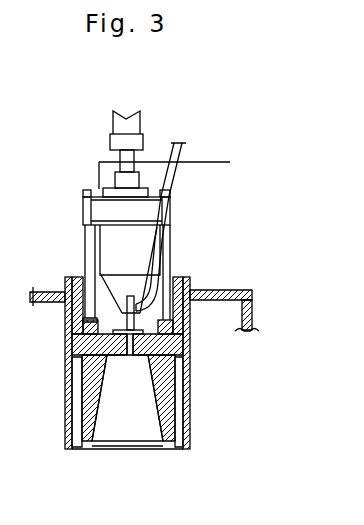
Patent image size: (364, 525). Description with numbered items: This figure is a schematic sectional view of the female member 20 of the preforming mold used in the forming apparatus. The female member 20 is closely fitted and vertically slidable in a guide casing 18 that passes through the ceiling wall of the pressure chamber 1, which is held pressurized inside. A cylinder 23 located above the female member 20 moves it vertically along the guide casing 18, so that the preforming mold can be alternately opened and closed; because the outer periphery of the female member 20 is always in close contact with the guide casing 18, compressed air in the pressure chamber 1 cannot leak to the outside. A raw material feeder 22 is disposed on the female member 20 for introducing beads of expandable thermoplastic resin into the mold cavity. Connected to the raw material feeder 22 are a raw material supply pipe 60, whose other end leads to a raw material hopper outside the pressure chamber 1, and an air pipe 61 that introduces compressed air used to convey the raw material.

The pressure chamber 1 is at (243, 290).
The guide casing 18 is at (192, 378).
The female member 20 is at (96, 432).
The raw material feeder 22 is at (150, 290).
The cylinder 23 is at (110, 141).
The raw material supply pipe 60 is at (155, 266).
The air pipe 61 is at (103, 293).